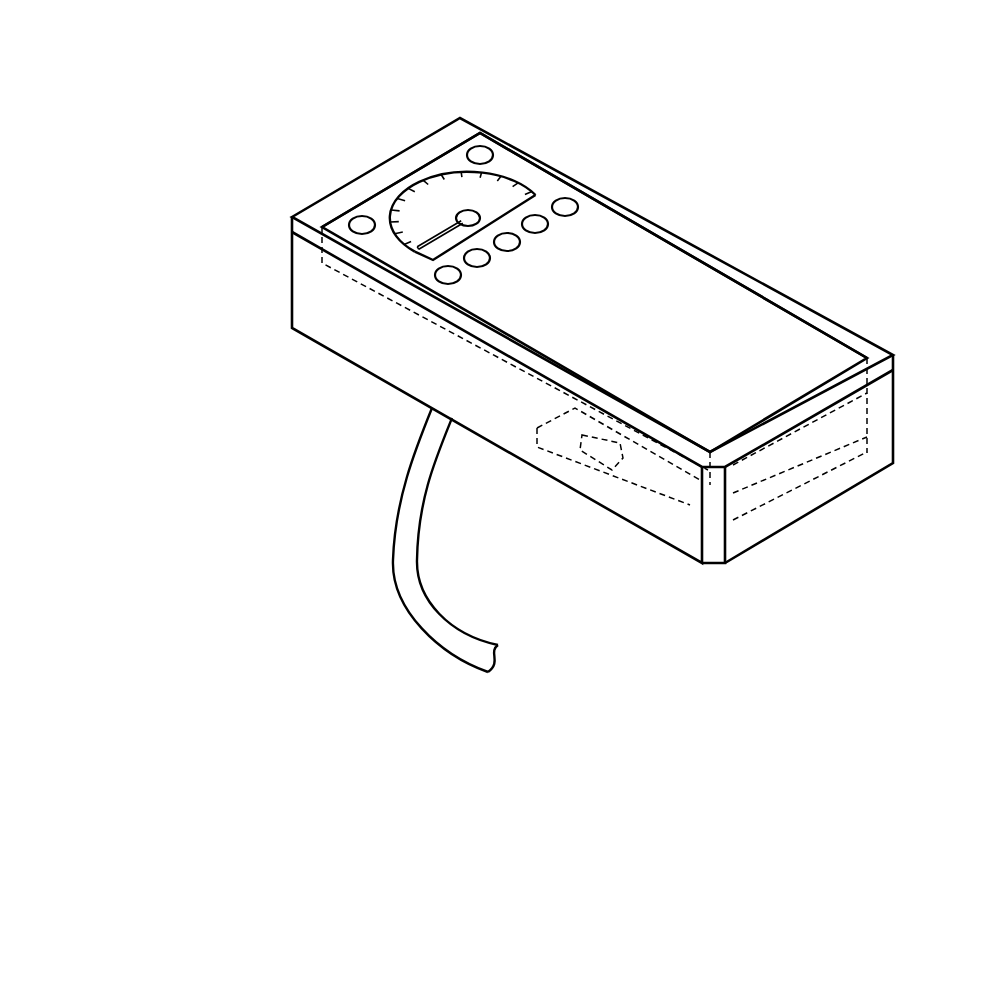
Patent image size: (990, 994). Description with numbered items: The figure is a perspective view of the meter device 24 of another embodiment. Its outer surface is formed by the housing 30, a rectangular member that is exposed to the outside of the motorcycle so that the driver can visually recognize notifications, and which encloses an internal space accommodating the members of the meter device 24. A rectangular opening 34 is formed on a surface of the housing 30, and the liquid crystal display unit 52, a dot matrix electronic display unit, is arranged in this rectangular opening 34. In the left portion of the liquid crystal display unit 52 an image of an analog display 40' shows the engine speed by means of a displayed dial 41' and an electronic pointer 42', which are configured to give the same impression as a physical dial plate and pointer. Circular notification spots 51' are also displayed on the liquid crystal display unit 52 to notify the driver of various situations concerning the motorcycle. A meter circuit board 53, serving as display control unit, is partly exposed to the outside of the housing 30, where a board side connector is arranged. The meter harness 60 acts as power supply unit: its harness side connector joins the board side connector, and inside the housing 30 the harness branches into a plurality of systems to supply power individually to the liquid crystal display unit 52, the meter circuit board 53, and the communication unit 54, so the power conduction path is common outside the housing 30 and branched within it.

The meter device 24 is at (852, 119).
The housing 30 is at (722, 263).
The rectangular opening 34 is at (792, 320).
The analog display 40' is at (343, 190).
The dial 41' is at (382, 190).
The electronic pointer 42' is at (354, 205).
The notification spots 51' is at (463, 162).
The liquid crystal display unit 52 is at (752, 312).
The meter circuit board 53 is at (613, 513).
The communication unit 54 is at (540, 440).
The meter harness 60 is at (377, 572).